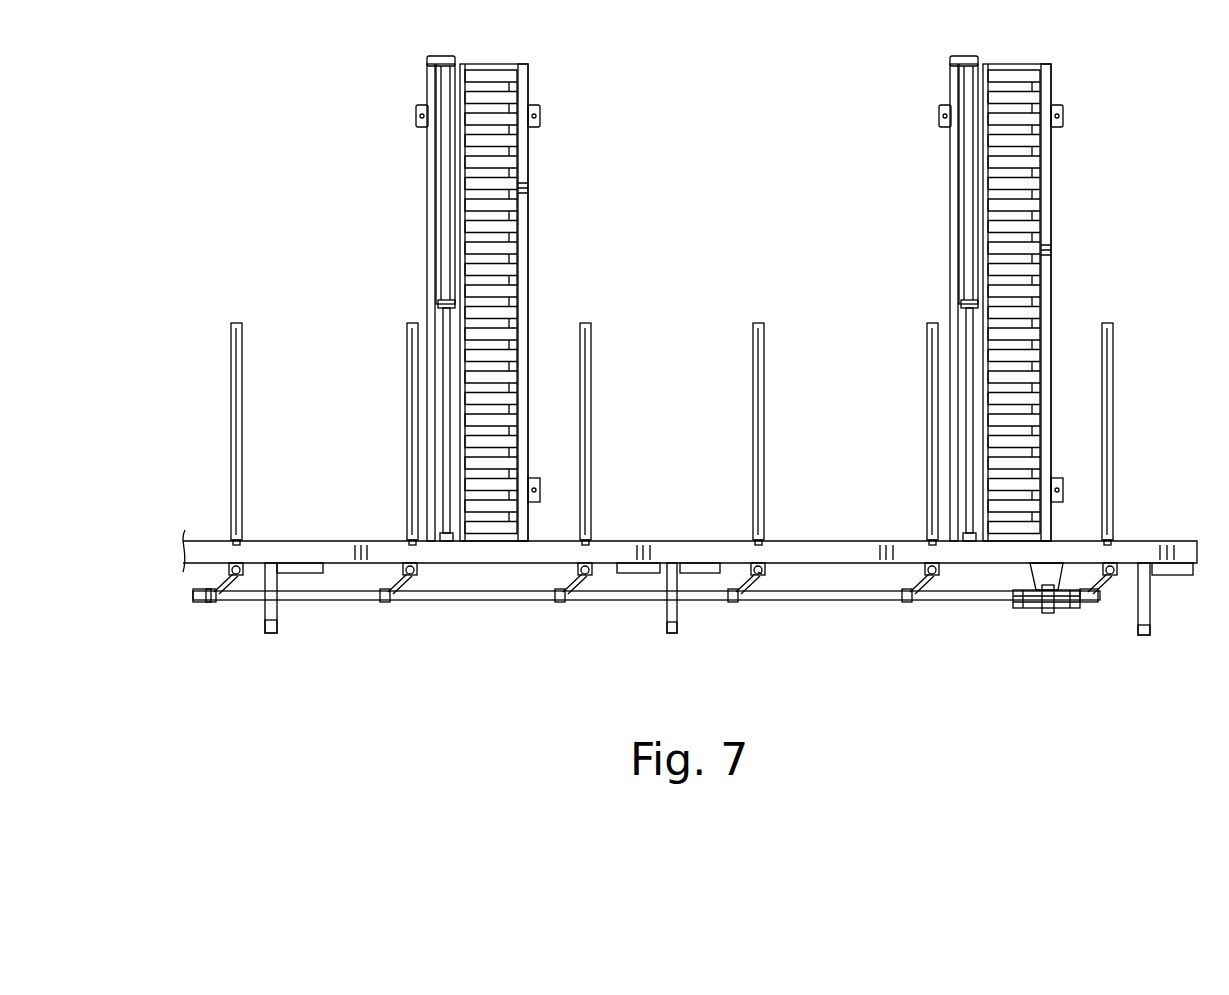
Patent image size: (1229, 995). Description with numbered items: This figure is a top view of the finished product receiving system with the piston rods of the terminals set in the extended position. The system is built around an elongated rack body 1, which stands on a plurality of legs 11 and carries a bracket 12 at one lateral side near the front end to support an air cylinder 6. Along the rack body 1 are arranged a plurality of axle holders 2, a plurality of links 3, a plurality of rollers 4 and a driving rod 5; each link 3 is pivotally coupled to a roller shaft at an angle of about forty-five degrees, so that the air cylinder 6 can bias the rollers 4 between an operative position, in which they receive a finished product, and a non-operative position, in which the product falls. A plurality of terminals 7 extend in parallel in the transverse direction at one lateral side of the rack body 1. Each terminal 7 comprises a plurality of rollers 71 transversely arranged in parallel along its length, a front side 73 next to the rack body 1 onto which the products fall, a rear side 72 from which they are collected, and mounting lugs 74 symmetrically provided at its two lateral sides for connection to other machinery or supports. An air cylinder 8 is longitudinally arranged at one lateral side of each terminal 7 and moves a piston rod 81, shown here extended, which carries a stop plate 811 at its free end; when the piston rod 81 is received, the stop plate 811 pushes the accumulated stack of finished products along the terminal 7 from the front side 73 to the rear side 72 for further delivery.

The rack body 1 is at (1130, 522).
The axle holder 2 is at (766, 582).
The link 3 is at (910, 573).
The roller 4 is at (778, 408).
The driving rod 5 is at (865, 612).
The air cylinder 6 is at (1052, 632).
The terminal 7 is at (548, 187).
The roller 71 is at (497, 258).
The rear side 72 is at (528, 148).
The front side 73 is at (528, 438).
The mounting lug 74 is at (416, 108).
The air cylinder 8 is at (415, 188).
The piston rod 81 is at (445, 425).
The stop plate 811 is at (441, 535).
The leg 11 is at (268, 624).
The bracket 12 is at (1012, 590).